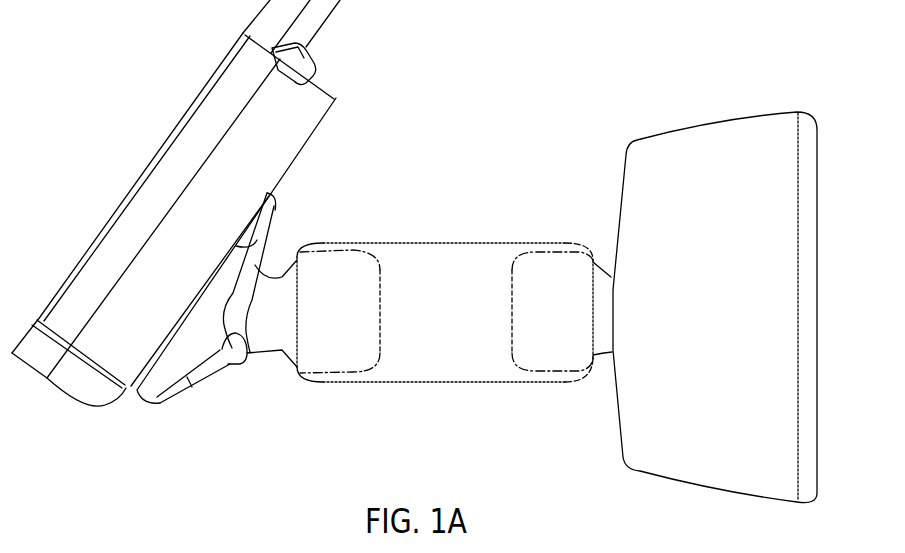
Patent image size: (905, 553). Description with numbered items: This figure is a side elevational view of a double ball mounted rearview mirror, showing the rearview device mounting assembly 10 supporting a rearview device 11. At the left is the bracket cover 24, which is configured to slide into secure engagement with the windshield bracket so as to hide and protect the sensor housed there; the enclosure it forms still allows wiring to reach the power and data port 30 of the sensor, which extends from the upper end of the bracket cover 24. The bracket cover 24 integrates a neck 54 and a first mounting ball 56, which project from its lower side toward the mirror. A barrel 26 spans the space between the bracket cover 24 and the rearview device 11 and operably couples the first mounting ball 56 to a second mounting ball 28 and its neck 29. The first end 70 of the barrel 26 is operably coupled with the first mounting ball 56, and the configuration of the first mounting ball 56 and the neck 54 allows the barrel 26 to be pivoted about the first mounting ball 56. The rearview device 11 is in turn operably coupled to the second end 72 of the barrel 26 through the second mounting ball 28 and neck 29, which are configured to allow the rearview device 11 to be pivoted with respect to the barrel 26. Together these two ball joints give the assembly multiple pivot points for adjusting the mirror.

The rearview device mounting assembly 10 is at (333, 98).
The rearview device 11 is at (697, 125).
The bracket cover 24 is at (298, 154).
The barrel 26 is at (432, 243).
The second mounting ball 28 is at (528, 257).
The neck 29 is at (607, 353).
The power and data port 30 is at (338, 16).
The neck 54 is at (263, 343).
The first mounting ball 56 is at (365, 257).
The first end 70 is at (320, 380).
The second end 72 is at (577, 380).